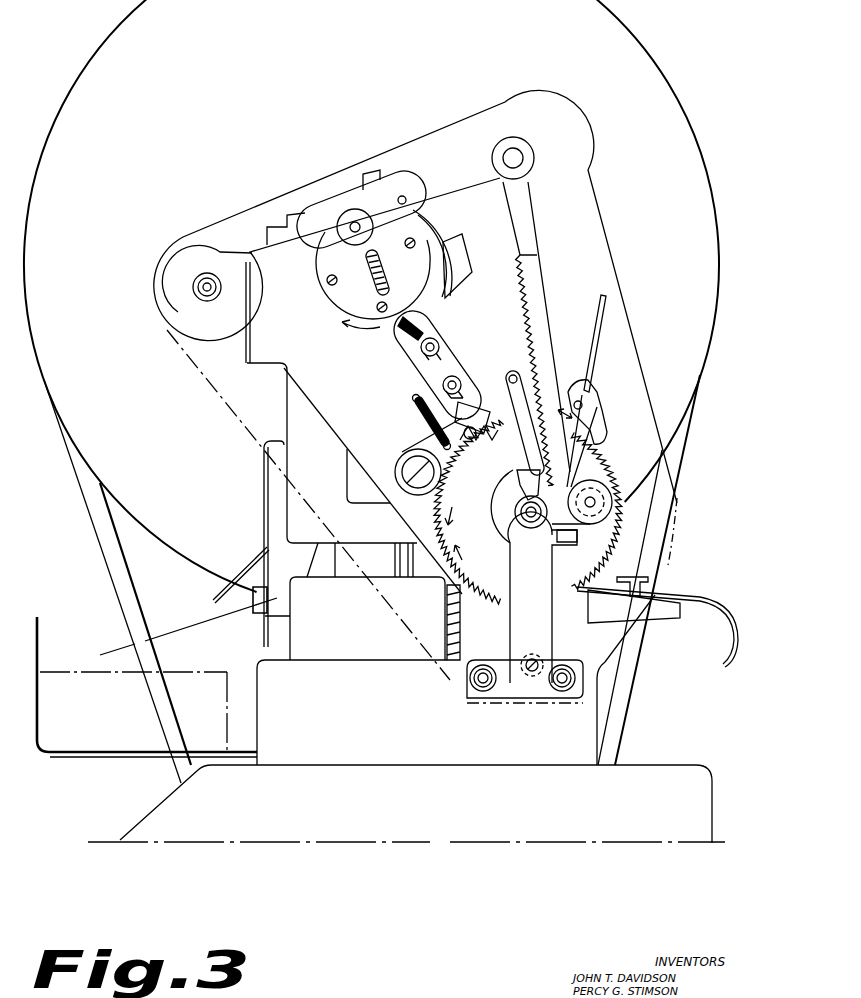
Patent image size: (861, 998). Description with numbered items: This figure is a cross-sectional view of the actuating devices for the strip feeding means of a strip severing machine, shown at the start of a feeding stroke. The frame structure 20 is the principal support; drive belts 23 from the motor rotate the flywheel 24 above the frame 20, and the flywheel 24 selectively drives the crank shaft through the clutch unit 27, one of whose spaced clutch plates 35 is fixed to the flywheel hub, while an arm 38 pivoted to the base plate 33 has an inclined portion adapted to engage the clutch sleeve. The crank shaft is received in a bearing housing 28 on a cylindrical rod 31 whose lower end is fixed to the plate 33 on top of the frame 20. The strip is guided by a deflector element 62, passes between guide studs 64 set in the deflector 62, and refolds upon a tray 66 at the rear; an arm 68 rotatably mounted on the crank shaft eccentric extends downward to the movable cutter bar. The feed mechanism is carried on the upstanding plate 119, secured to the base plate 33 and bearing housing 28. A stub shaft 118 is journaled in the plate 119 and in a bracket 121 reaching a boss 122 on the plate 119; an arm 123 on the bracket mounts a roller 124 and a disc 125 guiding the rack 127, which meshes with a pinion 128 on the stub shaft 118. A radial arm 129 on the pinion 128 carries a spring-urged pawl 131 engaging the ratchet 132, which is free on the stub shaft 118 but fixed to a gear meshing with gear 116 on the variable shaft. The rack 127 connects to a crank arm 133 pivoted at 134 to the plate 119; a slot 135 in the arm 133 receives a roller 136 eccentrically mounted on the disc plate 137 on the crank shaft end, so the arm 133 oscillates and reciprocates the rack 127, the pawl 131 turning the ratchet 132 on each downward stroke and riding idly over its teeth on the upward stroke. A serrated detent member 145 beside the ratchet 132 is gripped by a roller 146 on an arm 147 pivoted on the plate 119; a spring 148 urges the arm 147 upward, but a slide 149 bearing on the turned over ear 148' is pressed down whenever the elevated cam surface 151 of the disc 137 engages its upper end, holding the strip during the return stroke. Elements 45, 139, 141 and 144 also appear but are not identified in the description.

The frame structure 20 is at (707, 816).
The drive belts 23 is at (618, 745).
The flywheel 24 is at (715, 312).
The clutch unit 27 is at (453, 226).
The bearing housing 28 is at (287, 404).
The cylindrical rod 31 is at (347, 572).
The base plate 33 is at (572, 762).
The clutch plate 35 is at (437, 248).
The arm 38 is at (463, 266).
The rod 45 is at (596, 350).
The deflector element 62 is at (728, 619).
The guide studs 64 is at (628, 590).
The tray 66 is at (61, 755).
The arm 68 is at (432, 240).
The gear 116 is at (457, 561).
The stub shaft 118 is at (530, 522).
The plate 119 is at (195, 313).
The bracket 121 is at (515, 638).
The boss 122 is at (521, 664).
The arm 123 is at (579, 528).
The roller 124 is at (603, 516).
The disc 125 is at (500, 488).
The rack 127 is at (536, 305).
The pinion 128 is at (522, 473).
The arm 129 is at (573, 449).
The pawl 131 is at (601, 416).
The ratchet 132 is at (615, 483).
The crank arm 133 is at (453, 172).
The pivotal connection 134 is at (214, 288).
The slot 135 is at (402, 196).
The roller 136 is at (353, 213).
The disc plate 137 is at (322, 291).
The slot 139 is at (372, 291).
The knurled slot 141 is at (386, 271).
The screw 144 is at (382, 313).
The detent member 145 is at (493, 432).
The roller 146 is at (484, 416).
The arm 147 is at (426, 452).
The spring 148 is at (418, 422).
The turned over ear 148' is at (509, 423).
The slide 149 is at (450, 366).
The elevated cam surface 151 is at (326, 311).